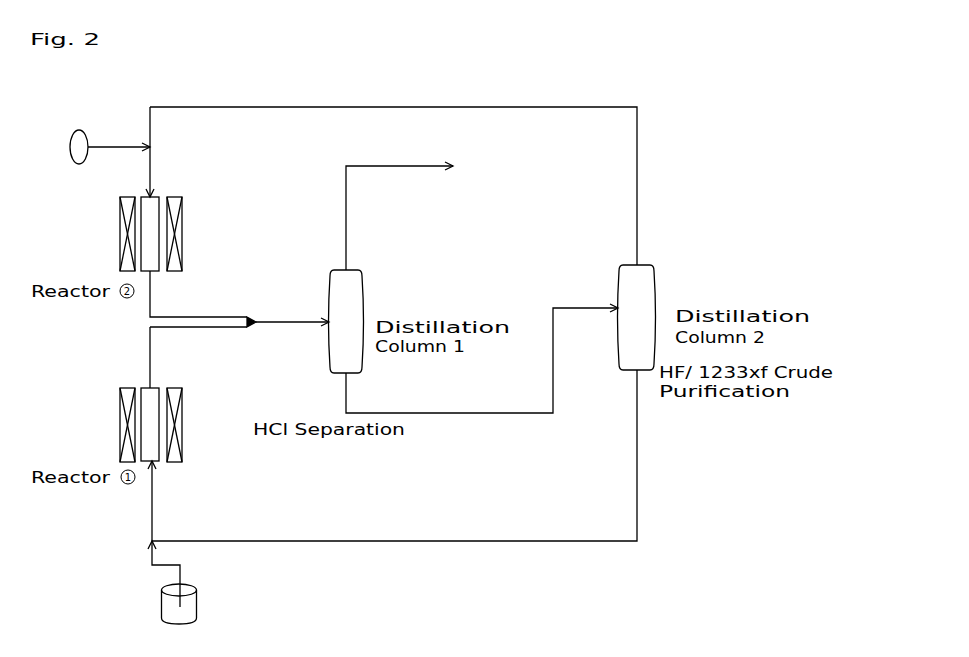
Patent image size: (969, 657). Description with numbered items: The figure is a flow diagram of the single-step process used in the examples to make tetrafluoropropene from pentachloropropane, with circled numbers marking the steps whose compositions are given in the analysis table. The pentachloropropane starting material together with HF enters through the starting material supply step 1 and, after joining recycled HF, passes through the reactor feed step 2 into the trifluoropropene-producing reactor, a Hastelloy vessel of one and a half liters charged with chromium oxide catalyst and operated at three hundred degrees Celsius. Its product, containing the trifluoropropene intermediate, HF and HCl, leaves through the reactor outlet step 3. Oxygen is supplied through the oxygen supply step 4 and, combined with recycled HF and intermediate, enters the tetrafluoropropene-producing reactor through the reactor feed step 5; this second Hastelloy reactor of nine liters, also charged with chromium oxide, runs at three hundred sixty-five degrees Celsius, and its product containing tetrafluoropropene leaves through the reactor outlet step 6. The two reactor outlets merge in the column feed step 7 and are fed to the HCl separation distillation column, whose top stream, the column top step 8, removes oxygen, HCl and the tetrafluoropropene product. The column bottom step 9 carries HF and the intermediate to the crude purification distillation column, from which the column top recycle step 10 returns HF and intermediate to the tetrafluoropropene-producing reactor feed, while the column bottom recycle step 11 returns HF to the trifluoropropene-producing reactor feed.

The starting material supply step 1 is at (172, 582).
The reactor 1 feed step 2 is at (165, 501).
The reactor 1 outlet step 3 is at (181, 357).
The oxygen supply step 4 is at (110, 143).
The reactor 2 feed step 5 is at (156, 152).
The reactor 2 outlet step 6 is at (203, 299).
The distillation column 1 feed step 7 is at (292, 316).
The HCl separation column top step 8 is at (399, 216).
The distillation column 1 bottom step 9 is at (482, 373).
The distillation column 2 top recycle step 10 is at (393, 171).
The distillation column 2 bottom recycle step 11 is at (394, 467).